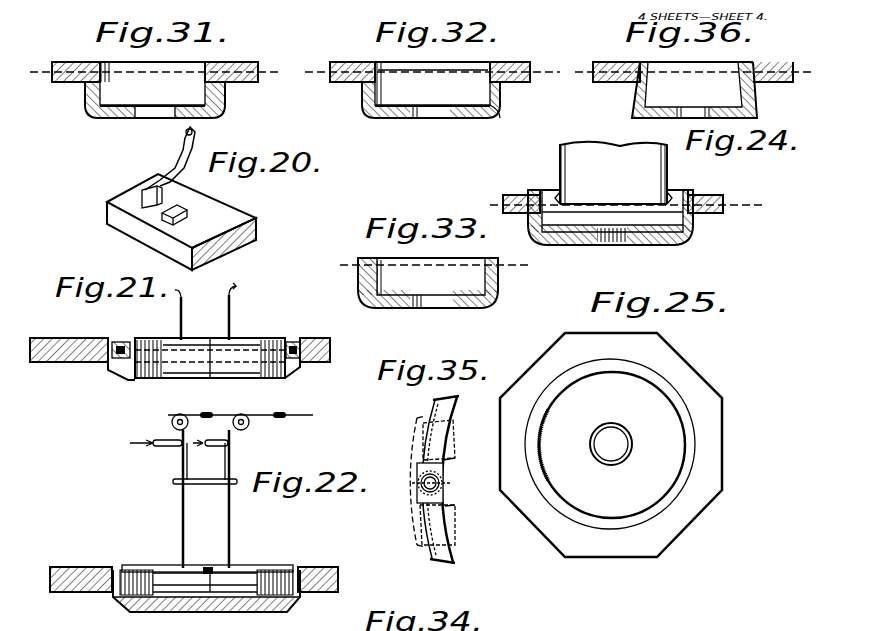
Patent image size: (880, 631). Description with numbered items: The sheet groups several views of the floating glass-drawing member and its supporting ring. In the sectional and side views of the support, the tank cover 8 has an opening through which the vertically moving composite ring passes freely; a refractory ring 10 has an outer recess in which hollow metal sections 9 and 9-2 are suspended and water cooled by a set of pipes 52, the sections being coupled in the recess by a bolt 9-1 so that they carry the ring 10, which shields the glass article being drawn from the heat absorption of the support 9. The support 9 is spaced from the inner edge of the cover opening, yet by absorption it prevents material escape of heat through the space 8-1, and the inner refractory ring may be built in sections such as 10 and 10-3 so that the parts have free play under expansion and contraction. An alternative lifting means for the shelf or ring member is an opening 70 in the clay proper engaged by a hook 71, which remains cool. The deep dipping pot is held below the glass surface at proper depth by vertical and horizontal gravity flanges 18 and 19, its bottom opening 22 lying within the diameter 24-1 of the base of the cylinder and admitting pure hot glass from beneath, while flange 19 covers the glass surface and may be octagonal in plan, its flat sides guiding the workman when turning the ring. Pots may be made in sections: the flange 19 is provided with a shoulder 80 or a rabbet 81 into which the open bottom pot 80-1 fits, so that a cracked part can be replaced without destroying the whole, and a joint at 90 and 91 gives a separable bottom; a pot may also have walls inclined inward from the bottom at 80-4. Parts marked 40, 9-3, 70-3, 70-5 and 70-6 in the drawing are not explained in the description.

In FIG. 21, the tank cover 8 is at (55, 362).
In FIG. 22, the tank cover 8 is at (68, 567).
In FIG. 21, the space 8-1 is at (112, 362).
In FIG. 22, the water cooled support 9 is at (300, 575).
In FIG. 35, the water cooled support 9 is at (456, 407).
In FIG. 22, the bolt 9-1 is at (212, 565).
In FIG. 22, the hollow metal section 9-2 is at (142, 570).
In FIG. 35, the hollow metal section 9-2 is at (455, 553).
In FIG. 35, the socket boss 9-3 is at (443, 468).
In FIG. 22, the refractory ring 10 is at (272, 570).
In FIG. 35, the refractory ring 10 is at (452, 428).
In FIG. 35, the refractory ring section 10-3 is at (455, 520).
In FIG. 24, the vertical gravity flange 18 is at (690, 192).
In FIG. 25, the vertical gravity flange 18 is at (670, 393).
In FIG. 31, the horizontal gravity flange 19 is at (240, 82).
In FIG. 32, the horizontal gravity flange 19 is at (522, 82).
In FIG. 25, the horizontal gravity flange 19 is at (712, 440).
In FIG. 24, the opening 22 is at (612, 242).
In FIG. 33, the opening 22 is at (433, 308).
In FIG. 24, the base diameter of cylinder 24-1 is at (567, 200).
In FIG. 20, the lever 40 is at (145, 192).
In FIG. 20, the water pipes 52 is at (181, 228).
In FIG. 21, the water pipes 52 is at (183, 310).
In FIG. 22, the water pipes 52 is at (183, 498).
In FIG. 21, the opening in the clay 70 is at (140, 352).
In FIG. 21, the box partition 70-3 is at (250, 345).
In FIG. 21, the box flange 70-5 is at (118, 375).
In FIG. 21, the box bottom 70-6 is at (142, 380).
In FIG. 20, the hook 71 is at (188, 214).
In FIG. 31, the shoulder 80 is at (85, 100).
In FIG. 31, the open bottom pot 80-1 is at (98, 112).
In FIG. 32, the open bottom pot 80-1 is at (395, 115).
In FIG. 33, the open bottom pot 80-1 is at (498, 292).
In FIG. 36, the inwardly inclined walls 80-4 is at (634, 108).
In FIG. 32, the rabbet 81 is at (365, 95).
In FIG. 32, the joint 90 is at (372, 112).
In FIG. 32, the joint 91 is at (500, 112).